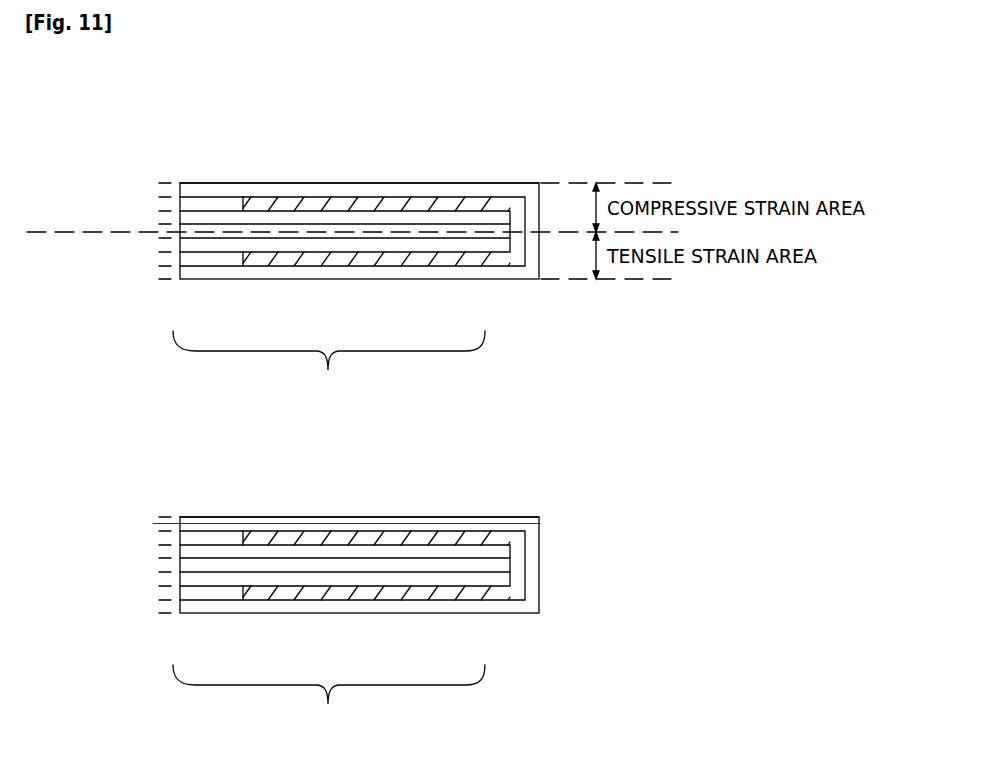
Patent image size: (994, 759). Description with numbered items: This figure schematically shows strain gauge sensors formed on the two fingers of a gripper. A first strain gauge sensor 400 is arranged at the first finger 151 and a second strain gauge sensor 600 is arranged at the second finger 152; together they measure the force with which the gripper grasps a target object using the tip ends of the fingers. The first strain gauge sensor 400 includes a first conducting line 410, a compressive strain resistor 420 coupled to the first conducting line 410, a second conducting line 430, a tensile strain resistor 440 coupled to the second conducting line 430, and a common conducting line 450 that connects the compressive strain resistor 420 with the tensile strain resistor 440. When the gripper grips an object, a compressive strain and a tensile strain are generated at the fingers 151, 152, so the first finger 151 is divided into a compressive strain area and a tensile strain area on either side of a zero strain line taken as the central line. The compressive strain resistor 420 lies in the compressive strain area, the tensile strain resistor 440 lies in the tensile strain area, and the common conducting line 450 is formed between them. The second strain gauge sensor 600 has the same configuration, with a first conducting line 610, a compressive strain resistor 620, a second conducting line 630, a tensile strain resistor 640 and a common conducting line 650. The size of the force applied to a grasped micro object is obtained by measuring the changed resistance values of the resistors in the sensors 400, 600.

The first finger 151 is at (466, 187).
The second finger 152 is at (359, 470).
The first strain gauge sensor 400 is at (329, 366).
The first conducting line 410 is at (228, 203).
The compressive strain resistor 420 is at (318, 203).
The second conducting line 430 is at (202, 258).
The tensile strain resistor 440 is at (392, 257).
The common conducting line 450 is at (453, 232).
The second strain gauge sensor 600 is at (329, 700).
The first conducting line 610 is at (352, 605).
The compressive strain resistor 620 is at (376, 602).
The second conducting line 630 is at (346, 598).
The tensile strain resistor 640 is at (376, 632).
The common conducting line 650 is at (345, 617).